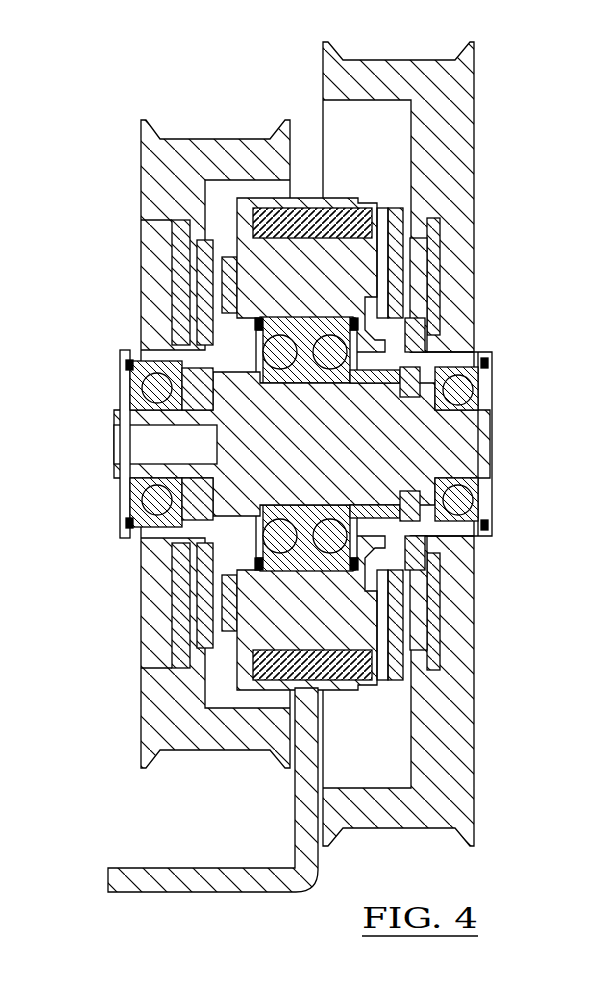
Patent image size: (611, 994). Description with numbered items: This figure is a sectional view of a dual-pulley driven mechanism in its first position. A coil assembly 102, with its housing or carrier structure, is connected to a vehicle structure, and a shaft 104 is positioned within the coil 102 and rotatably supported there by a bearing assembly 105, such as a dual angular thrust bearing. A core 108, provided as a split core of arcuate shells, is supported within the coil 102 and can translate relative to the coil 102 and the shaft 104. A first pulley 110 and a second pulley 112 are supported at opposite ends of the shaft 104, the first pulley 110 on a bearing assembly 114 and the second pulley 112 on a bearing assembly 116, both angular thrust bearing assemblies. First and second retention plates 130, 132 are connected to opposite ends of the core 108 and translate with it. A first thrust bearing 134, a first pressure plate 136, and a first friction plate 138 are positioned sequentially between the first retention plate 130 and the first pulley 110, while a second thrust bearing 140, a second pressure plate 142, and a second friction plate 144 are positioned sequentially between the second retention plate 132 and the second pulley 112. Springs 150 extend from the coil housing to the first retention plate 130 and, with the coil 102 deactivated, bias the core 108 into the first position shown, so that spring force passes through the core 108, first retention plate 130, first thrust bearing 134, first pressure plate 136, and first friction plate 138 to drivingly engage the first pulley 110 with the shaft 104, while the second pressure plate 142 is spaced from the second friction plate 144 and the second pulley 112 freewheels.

The coil assembly 102 is at (327, 291).
The shaft 104 is at (470, 423).
The bearing assembly 105 is at (217, 427).
The core 108 is at (382, 267).
The first pulley 110 is at (372, 75).
The second pulley 112 is at (190, 157).
The bearing assembly 114 is at (460, 390).
The bearing assembly 116 is at (157, 388).
The first retention plate 130 is at (405, 279).
The second retention plate 132 is at (207, 268).
The first thrust bearing 134 is at (423, 344).
The first pressure plate 136 is at (430, 291).
The first friction plate 138 is at (440, 315).
The second thrust bearing 140 is at (210, 340).
The second pressure plate 142 is at (203, 295).
The second friction plate 144 is at (180, 317).
The springs 150 is at (287, 225).